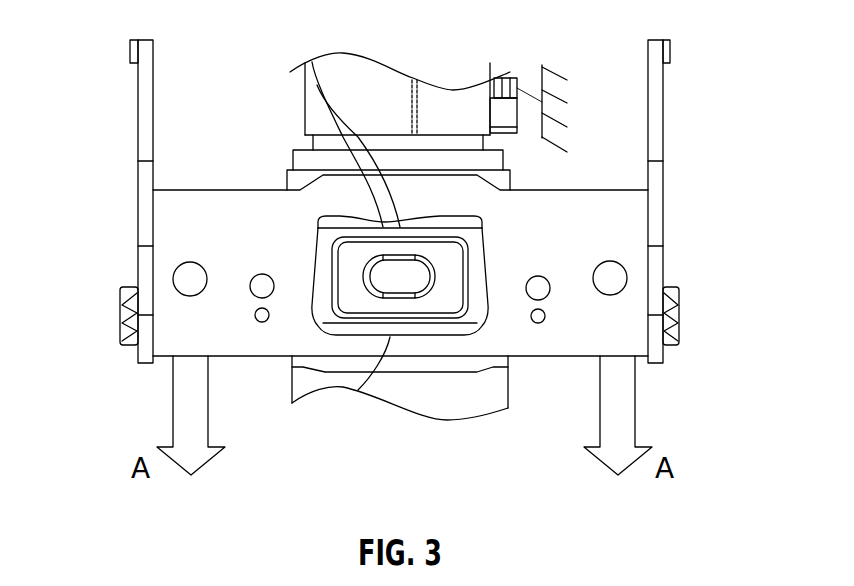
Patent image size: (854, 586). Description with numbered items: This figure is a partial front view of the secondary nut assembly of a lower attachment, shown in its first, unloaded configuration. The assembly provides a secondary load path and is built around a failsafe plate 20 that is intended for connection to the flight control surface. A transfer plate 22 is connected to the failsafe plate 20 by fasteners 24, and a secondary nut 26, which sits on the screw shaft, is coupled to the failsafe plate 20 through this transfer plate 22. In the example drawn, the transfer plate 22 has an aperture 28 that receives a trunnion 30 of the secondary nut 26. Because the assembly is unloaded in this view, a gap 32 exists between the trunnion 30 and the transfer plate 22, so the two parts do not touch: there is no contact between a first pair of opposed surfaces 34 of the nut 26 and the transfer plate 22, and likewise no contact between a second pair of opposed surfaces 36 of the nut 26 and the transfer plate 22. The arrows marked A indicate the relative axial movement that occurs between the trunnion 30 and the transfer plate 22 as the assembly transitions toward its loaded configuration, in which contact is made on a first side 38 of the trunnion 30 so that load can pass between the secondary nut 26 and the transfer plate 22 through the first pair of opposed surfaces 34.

The failsafe plate 20 is at (664, 108).
The transfer plate 22 is at (620, 330).
The fasteners 24 is at (120, 313).
The secondary nut 26 is at (291, 182).
The aperture 28 is at (314, 270).
The trunnion 30 is at (433, 298).
The gap 32 is at (465, 222).
The first pair of opposed surfaces 34 is at (312, 62).
The second pair of opposed surfaces 36 is at (438, 308).
The first side 38 is at (450, 248).